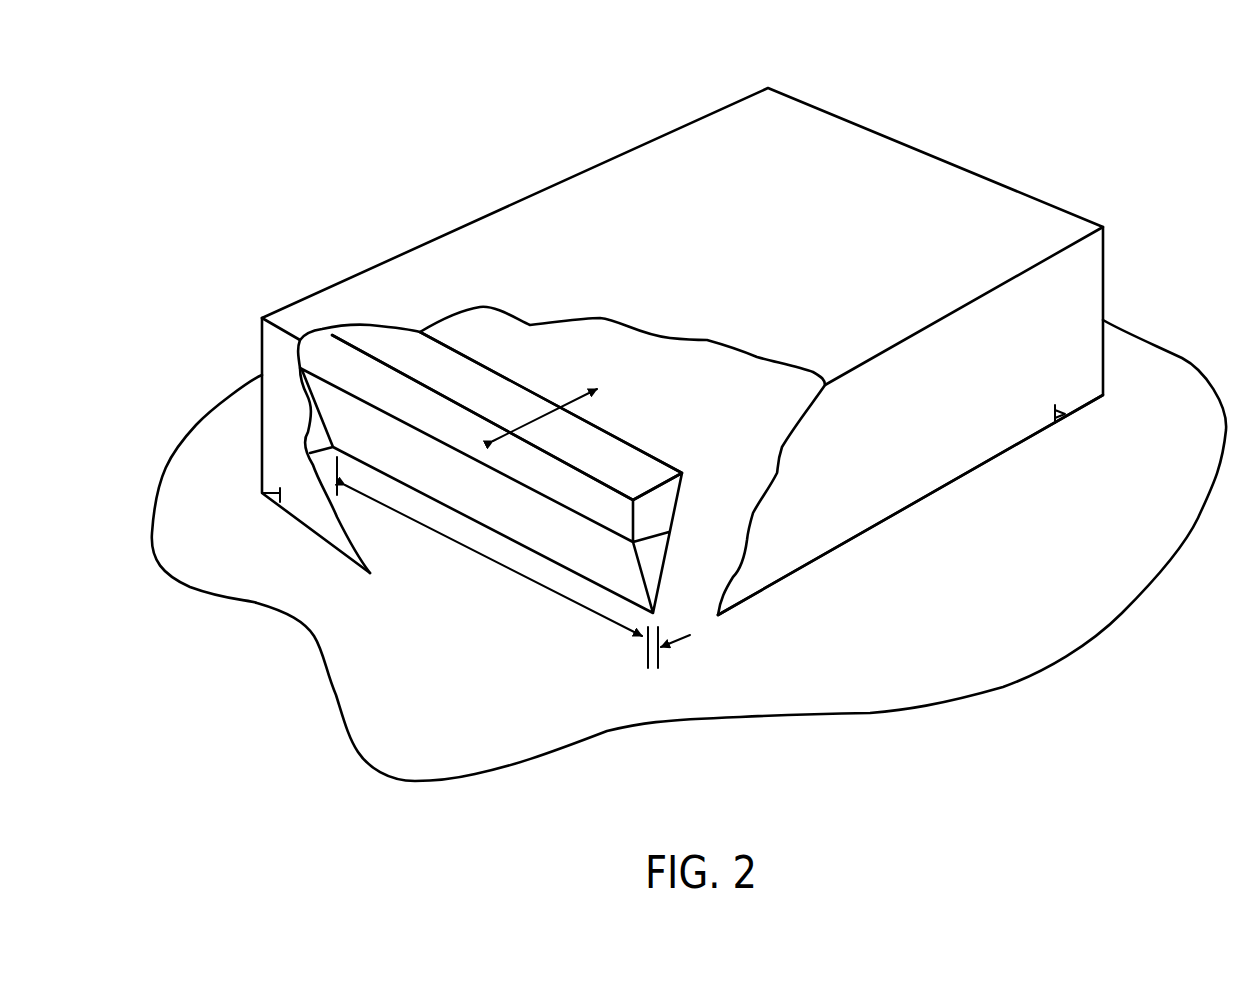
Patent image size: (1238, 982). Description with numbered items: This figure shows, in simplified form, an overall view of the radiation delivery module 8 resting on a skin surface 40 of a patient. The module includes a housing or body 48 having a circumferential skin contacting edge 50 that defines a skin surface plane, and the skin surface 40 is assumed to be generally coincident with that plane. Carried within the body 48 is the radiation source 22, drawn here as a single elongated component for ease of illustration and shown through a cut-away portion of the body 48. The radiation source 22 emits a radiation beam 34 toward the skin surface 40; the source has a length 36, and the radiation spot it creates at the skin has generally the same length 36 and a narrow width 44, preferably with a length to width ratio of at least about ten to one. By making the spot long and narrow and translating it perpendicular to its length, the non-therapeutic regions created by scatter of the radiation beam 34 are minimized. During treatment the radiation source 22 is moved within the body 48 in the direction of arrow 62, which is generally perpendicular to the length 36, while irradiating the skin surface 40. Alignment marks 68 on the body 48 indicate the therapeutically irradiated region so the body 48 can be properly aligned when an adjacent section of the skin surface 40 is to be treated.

The radiation delivery module 8 is at (1118, 102).
The radiation source 22 is at (660, 503).
The radiation beam 34 is at (602, 573).
The length 36 is at (470, 552).
The skin surface 40 is at (900, 673).
The width 44 is at (645, 660).
The body 48 is at (1085, 278).
The skin contacting edge 50 is at (893, 512).
The arrow 62 is at (580, 402).
The alignment marks 68 is at (265, 497).